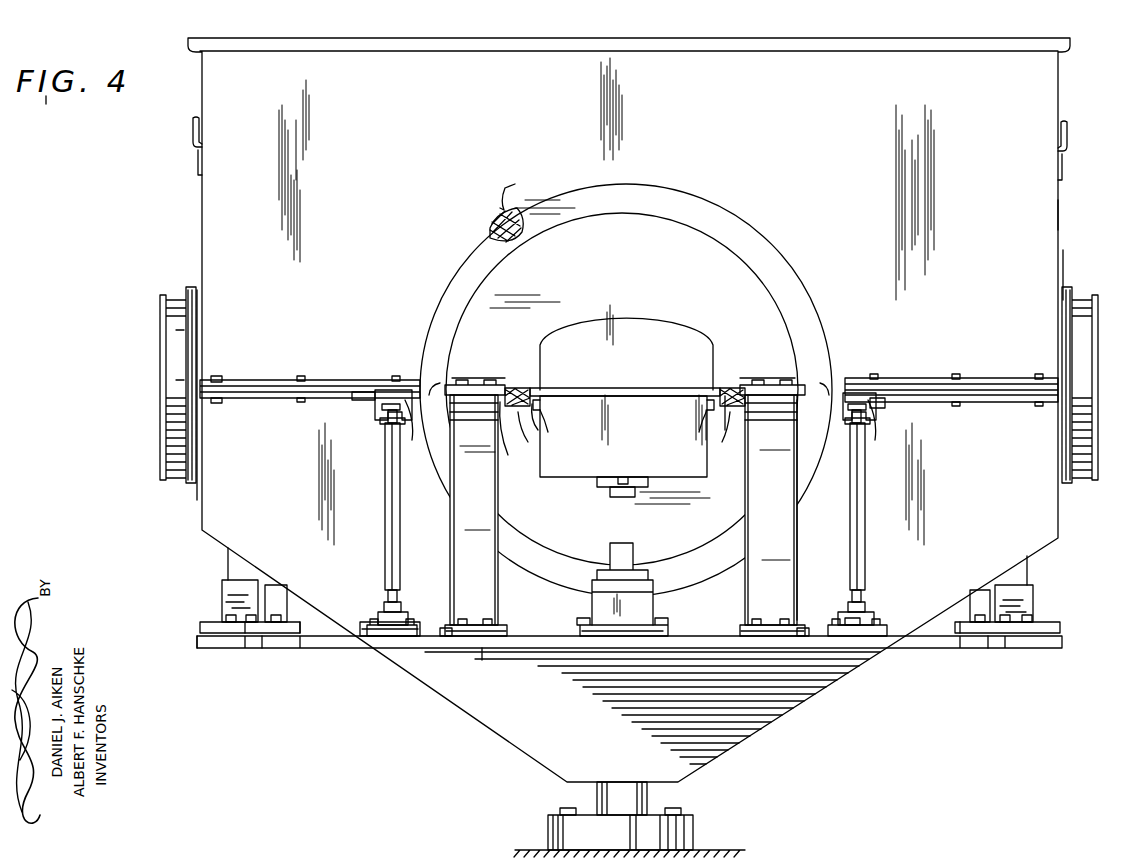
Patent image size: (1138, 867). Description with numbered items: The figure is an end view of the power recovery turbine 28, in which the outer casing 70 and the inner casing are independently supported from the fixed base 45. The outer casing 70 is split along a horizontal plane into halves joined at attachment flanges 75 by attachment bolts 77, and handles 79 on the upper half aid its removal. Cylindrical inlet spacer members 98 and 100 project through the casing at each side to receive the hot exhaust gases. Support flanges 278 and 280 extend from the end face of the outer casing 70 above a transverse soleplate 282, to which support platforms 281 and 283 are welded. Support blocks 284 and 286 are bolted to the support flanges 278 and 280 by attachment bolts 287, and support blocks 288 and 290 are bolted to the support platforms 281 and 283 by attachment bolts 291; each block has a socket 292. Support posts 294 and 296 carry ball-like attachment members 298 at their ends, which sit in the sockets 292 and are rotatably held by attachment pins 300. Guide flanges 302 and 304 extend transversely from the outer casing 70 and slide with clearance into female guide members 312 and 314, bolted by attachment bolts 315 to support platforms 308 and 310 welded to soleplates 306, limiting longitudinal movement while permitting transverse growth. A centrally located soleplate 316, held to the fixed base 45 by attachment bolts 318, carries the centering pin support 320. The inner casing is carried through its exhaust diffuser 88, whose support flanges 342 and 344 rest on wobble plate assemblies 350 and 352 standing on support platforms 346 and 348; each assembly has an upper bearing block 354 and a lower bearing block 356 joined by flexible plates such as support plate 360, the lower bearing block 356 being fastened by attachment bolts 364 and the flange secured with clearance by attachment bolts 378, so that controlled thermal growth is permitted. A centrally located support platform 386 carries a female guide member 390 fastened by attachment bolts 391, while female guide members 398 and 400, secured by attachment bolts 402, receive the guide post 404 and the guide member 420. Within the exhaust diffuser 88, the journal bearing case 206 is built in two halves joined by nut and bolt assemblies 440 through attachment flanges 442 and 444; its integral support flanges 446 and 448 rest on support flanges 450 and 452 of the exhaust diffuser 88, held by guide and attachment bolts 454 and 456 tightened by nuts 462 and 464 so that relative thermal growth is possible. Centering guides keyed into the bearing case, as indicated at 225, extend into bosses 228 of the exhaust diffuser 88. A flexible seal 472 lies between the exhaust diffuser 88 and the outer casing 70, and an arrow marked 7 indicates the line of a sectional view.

The outer casing 70 is at (1062, 100).
The power recovery turbine 28 is at (1075, 200).
The handles 79 is at (193, 140).
The inlet spacer member 98 is at (160, 300).
The inlet spacer member 100 is at (1092, 300).
The attachment flanges 75 is at (292, 382).
The attachment bolts 77 is at (216, 380).
The support block 284 is at (378, 392).
The support flange 278 is at (392, 390).
The support flange 280 is at (858, 393).
The ball-like attachment member 298 is at (400, 410).
The support post 294 is at (386, 505).
The support post 296 is at (851, 510).
The attachment pins 300 is at (383, 410).
The sockets 292 is at (385, 420).
The support block 286 is at (880, 408).
The attachment bolts 287 is at (412, 432).
The support block 288 is at (367, 626).
The support platform 283 is at (870, 636).
The support block 290 is at (892, 625).
The attachment bolts 291 is at (444, 637).
The flexible seal 472 is at (530, 236).
The section line 7 is at (515, 195).
The attachment bolts 378 is at (448, 382).
The wobble plate assembly 350 is at (500, 497).
The support plate 360 is at (452, 526).
The support flange 342 is at (476, 392).
The support flange 344 is at (772, 392).
The exhaust diffuser 88 is at (455, 380).
The upper bearing block 354 is at (455, 420).
The attachment bolts 364 is at (488, 619).
The lower bearing block 356 is at (500, 631).
The nut and bolt assemblies 440 is at (698, 348).
The journal bearing case 206 is at (664, 356).
The attachment flange 442 is at (552, 392).
The guide and attachment bolt 454 is at (516, 388).
The guide and attachment bolt 456 is at (738, 388).
The support flange 448 is at (728, 388).
The support flange 446 is at (540, 400).
The attachment flange 444 is at (542, 405).
The nut 462 is at (530, 440).
The nut 464 is at (712, 405).
The support flange 452 is at (738, 420).
The support flange 450 is at (508, 445).
The keying location 225 is at (622, 478).
The bosses 228 is at (618, 496).
The female guide member 390 is at (611, 556).
The attachment bolts 391 is at (588, 630).
The support platform 386 is at (600, 640).
The support platform 348 is at (826, 660).
The soleplate 306 is at (218, 648).
The soleplates 282 is at (262, 652).
The support platform 308 is at (200, 638).
The female guide member 312 is at (312, 636).
The attachment bolts 315 is at (282, 650).
The support platform 310 is at (1062, 635).
The female guide member 314 is at (975, 614).
The support platform 281 is at (368, 638).
The support platform 346 is at (484, 652).
The female guide member 398 is at (222, 596).
The guide flange 302 is at (272, 586).
The guide post 404 is at (226, 566).
The attachment bolts 402 is at (225, 619).
The female guide member 400 is at (1036, 600).
The guide flange 304 is at (980, 588).
The guide member 420 is at (1032, 568).
The wobble plate assembly 352 is at (800, 546).
The centering pin support 320 is at (652, 800).
The soleplate 316 is at (690, 836).
The attachment bolts 318 is at (562, 810).
The fixed base 45 is at (528, 850).